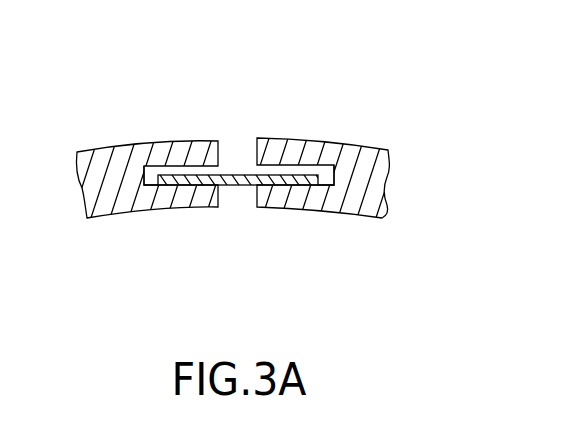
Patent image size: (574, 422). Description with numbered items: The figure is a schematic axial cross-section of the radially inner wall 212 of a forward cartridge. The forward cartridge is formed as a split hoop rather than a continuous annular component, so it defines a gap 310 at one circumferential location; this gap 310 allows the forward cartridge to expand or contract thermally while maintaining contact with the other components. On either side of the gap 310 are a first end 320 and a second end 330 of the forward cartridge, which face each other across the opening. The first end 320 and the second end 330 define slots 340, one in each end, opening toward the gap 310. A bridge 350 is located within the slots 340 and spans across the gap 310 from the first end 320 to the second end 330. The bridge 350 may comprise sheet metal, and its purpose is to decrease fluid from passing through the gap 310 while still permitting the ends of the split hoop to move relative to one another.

The radially inner wall 212 is at (237, 150).
The gap 310 is at (238, 118).
The first end 320 is at (193, 125).
The second end 330 is at (291, 126).
The slots 340 is at (145, 185).
The bridge 350 is at (238, 185).